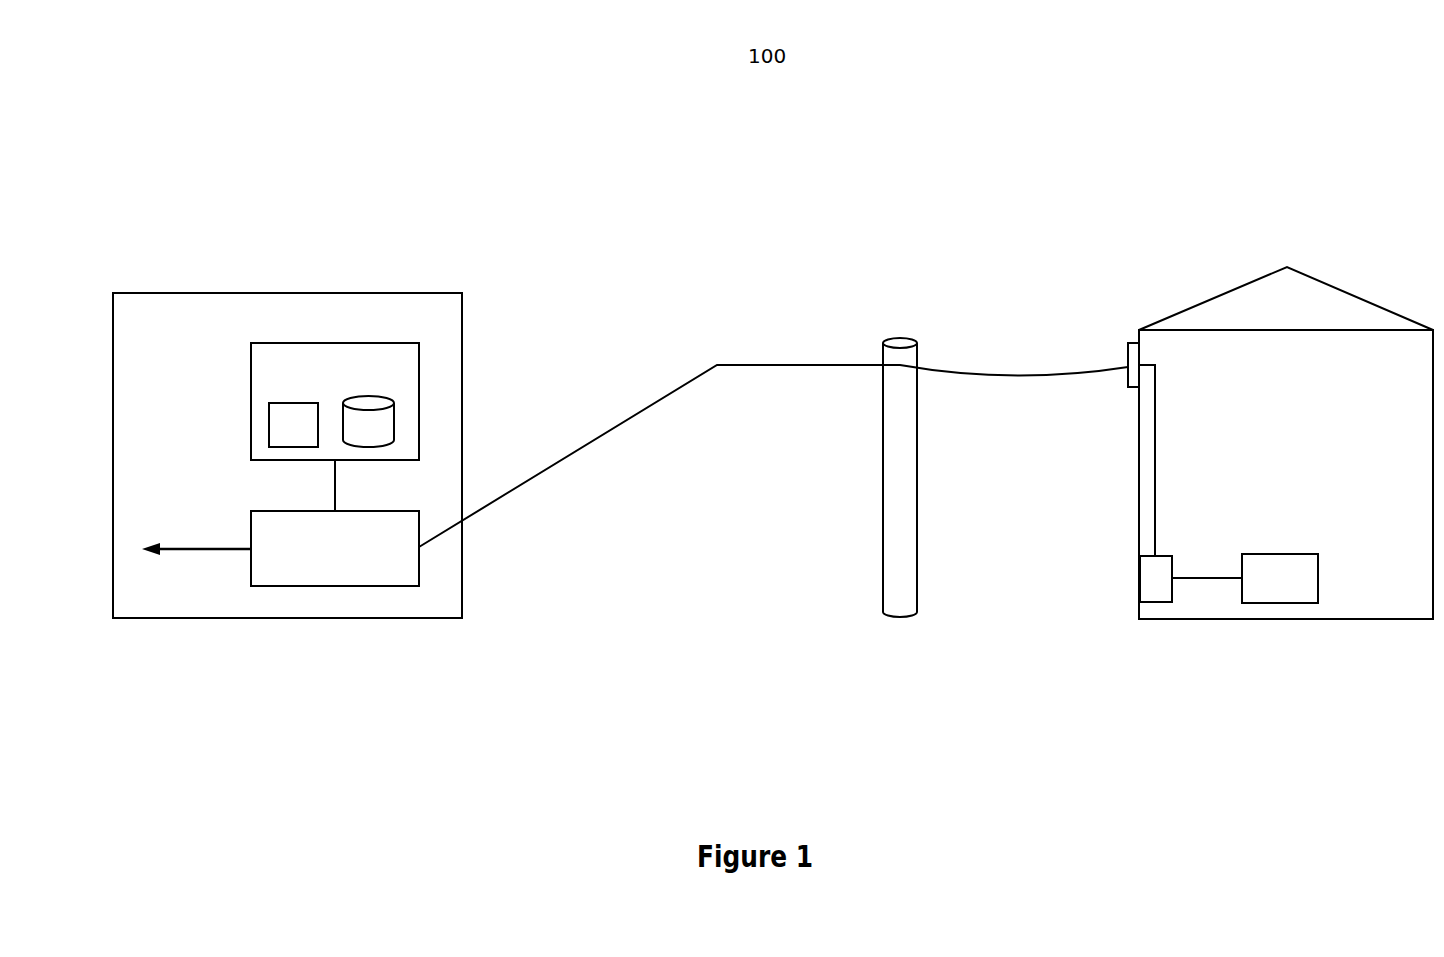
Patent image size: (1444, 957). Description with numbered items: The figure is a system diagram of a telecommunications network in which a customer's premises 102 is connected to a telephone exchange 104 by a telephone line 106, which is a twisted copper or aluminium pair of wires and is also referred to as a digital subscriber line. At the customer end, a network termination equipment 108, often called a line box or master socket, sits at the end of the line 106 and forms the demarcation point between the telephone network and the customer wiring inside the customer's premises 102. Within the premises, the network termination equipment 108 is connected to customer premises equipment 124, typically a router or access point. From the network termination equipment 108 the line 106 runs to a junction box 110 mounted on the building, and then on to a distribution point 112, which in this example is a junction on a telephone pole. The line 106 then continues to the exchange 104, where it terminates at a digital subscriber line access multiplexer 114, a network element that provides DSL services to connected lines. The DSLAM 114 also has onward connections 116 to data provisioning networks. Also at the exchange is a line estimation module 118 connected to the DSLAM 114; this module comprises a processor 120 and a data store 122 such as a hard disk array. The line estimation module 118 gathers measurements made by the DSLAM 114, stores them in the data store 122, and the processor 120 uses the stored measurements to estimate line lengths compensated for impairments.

The customer's premises 102 is at (1224, 281).
The telephone exchange 104 is at (155, 290).
The telephone line 106 is at (771, 358).
The network termination equipment 108 is at (1133, 571).
The junction box 110 is at (1128, 340).
The distribution point 112 is at (874, 571).
The digital subscriber line access multiplexer 114 is at (388, 510).
The onward connections 116 is at (196, 536).
The line estimation module 118 is at (340, 340).
The processor 120 is at (287, 403).
The data store 122 is at (361, 396).
The customer premises equipment 124 is at (1262, 548).